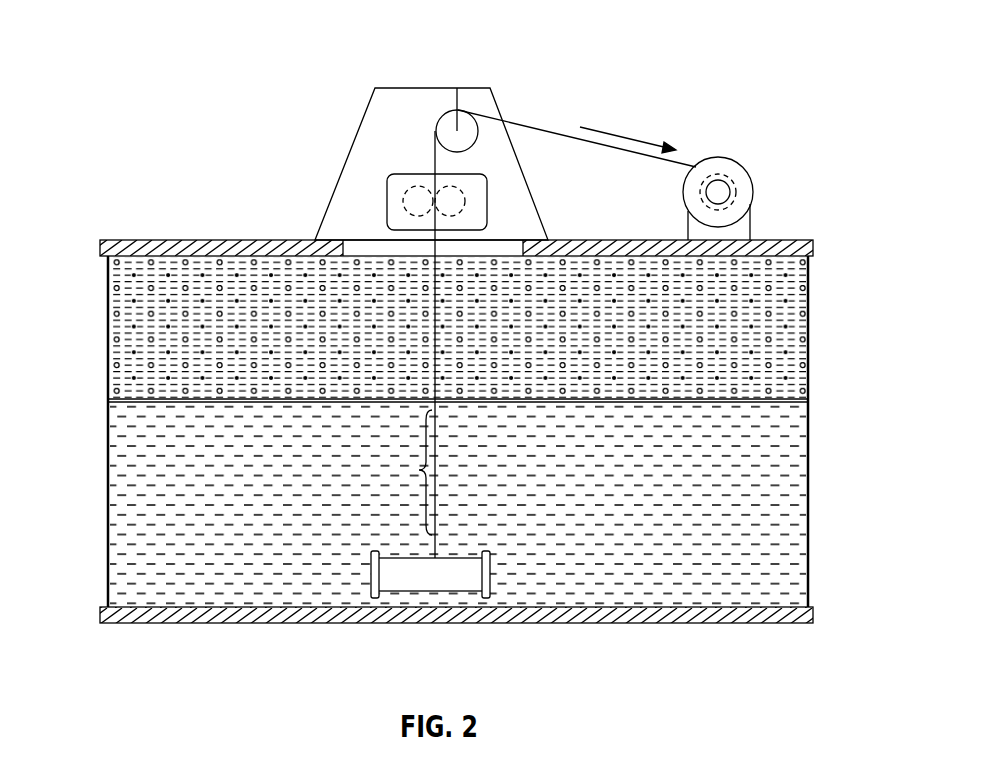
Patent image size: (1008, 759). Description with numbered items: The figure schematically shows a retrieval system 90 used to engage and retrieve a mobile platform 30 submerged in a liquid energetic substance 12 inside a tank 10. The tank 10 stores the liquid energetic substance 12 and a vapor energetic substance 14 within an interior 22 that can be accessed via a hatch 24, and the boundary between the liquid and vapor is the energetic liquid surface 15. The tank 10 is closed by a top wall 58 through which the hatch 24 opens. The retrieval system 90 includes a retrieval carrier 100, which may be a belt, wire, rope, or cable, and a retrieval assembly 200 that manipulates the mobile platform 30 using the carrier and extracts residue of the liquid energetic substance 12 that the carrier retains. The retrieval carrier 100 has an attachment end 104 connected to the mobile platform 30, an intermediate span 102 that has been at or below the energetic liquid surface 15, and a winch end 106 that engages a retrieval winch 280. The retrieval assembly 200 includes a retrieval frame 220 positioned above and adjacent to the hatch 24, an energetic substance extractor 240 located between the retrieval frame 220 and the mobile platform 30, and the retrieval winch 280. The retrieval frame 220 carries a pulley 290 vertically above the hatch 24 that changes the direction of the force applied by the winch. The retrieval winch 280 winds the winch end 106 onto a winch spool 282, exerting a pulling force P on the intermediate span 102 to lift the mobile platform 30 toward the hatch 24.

The retrieval assembly 200 is at (153, 48).
The tank 10 is at (670, 632).
The top cover plate 58 is at (136, 240).
The hatch 24 is at (492, 245).
The vapor energetic substance 14 is at (800, 305).
The interior 22 is at (119, 348).
The energetic liquid surface 15 is at (497, 398).
The liquid energetic substance 12 is at (800, 492).
The retrieval frame 220 is at (357, 130).
The pulley 290 is at (447, 123).
The energetic substance extractor 240 is at (388, 203).
The retrieval carrier 100 is at (426, 337).
The intermediate span 102 is at (399, 472).
The attachment end 104 is at (437, 492).
The mobile platform 30 is at (404, 592).
The retrieval winch 280 is at (745, 170).
The winch spool 282 is at (740, 195).
The winch end 106 is at (695, 195).
The retrieval system 90 is at (544, 90).
The pulling force P is at (626, 137).